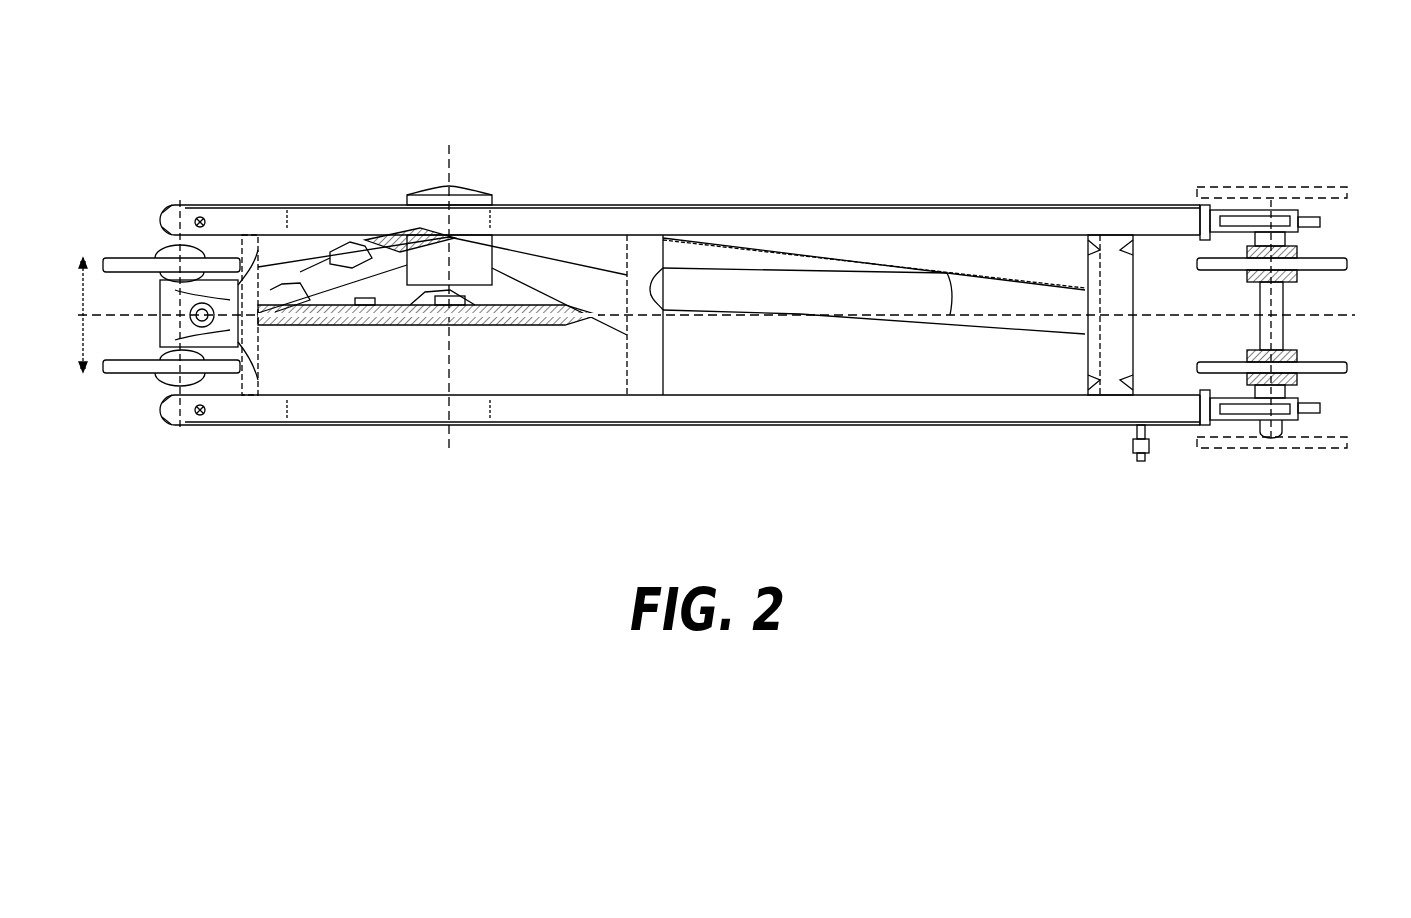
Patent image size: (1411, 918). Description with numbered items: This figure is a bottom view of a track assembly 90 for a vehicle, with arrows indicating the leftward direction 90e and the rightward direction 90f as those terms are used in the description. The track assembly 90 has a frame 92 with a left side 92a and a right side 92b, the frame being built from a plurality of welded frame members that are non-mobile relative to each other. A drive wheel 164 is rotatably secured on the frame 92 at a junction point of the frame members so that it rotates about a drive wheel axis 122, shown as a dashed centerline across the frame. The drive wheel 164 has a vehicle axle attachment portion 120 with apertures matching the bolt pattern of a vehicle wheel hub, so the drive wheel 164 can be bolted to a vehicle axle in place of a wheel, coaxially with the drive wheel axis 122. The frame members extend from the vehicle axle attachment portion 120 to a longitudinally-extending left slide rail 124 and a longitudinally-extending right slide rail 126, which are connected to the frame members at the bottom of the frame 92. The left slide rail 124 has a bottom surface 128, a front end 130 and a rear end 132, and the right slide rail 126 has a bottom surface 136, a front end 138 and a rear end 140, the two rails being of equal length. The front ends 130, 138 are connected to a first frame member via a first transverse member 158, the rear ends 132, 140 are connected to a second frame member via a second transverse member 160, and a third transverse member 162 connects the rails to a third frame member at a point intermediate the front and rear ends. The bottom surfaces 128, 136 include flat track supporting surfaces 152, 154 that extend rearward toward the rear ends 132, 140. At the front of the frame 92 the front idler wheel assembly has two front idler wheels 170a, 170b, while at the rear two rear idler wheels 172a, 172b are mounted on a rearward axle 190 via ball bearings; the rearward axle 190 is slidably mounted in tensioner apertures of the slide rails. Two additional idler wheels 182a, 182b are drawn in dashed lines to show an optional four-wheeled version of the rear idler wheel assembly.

The track assembly 90 is at (186, 73).
The leftward direction 90e is at (82, 300).
The rightward direction 90f is at (82, 350).
The frame 92 is at (832, 262).
The left side 92a is at (782, 186).
The right side 92b is at (851, 466).
The vehicle axle attachment portion 120 is at (443, 350).
The drive wheel axis 122 is at (449, 165).
The left slide rail 124 is at (650, 212).
The right slide rail 126 is at (622, 412).
The bottom surface 128 is at (562, 215).
The front end 130 is at (228, 192).
The rear end 132 is at (1140, 185).
The bottom surface 136 is at (528, 410).
The front end 138 is at (228, 438).
The rear end 140 is at (1177, 446).
The flat track supporting surface 152 is at (972, 213).
The flat track supporting surface 154 is at (1017, 410).
The first transverse member 158 is at (163, 305).
The second transverse member 160 is at (1105, 342).
The third transverse member 162 is at (655, 375).
The drive wheel 164 is at (363, 326).
The front idler wheel 170a is at (125, 256).
The front idler wheel 170b is at (125, 375).
The rear idler wheel 172a is at (1332, 257).
The rear idler wheel 172b is at (1345, 362).
The additional idler wheel 182a is at (1290, 186).
The additional idler wheel 182b is at (1337, 449).
The rearward axle 190 is at (1283, 303).